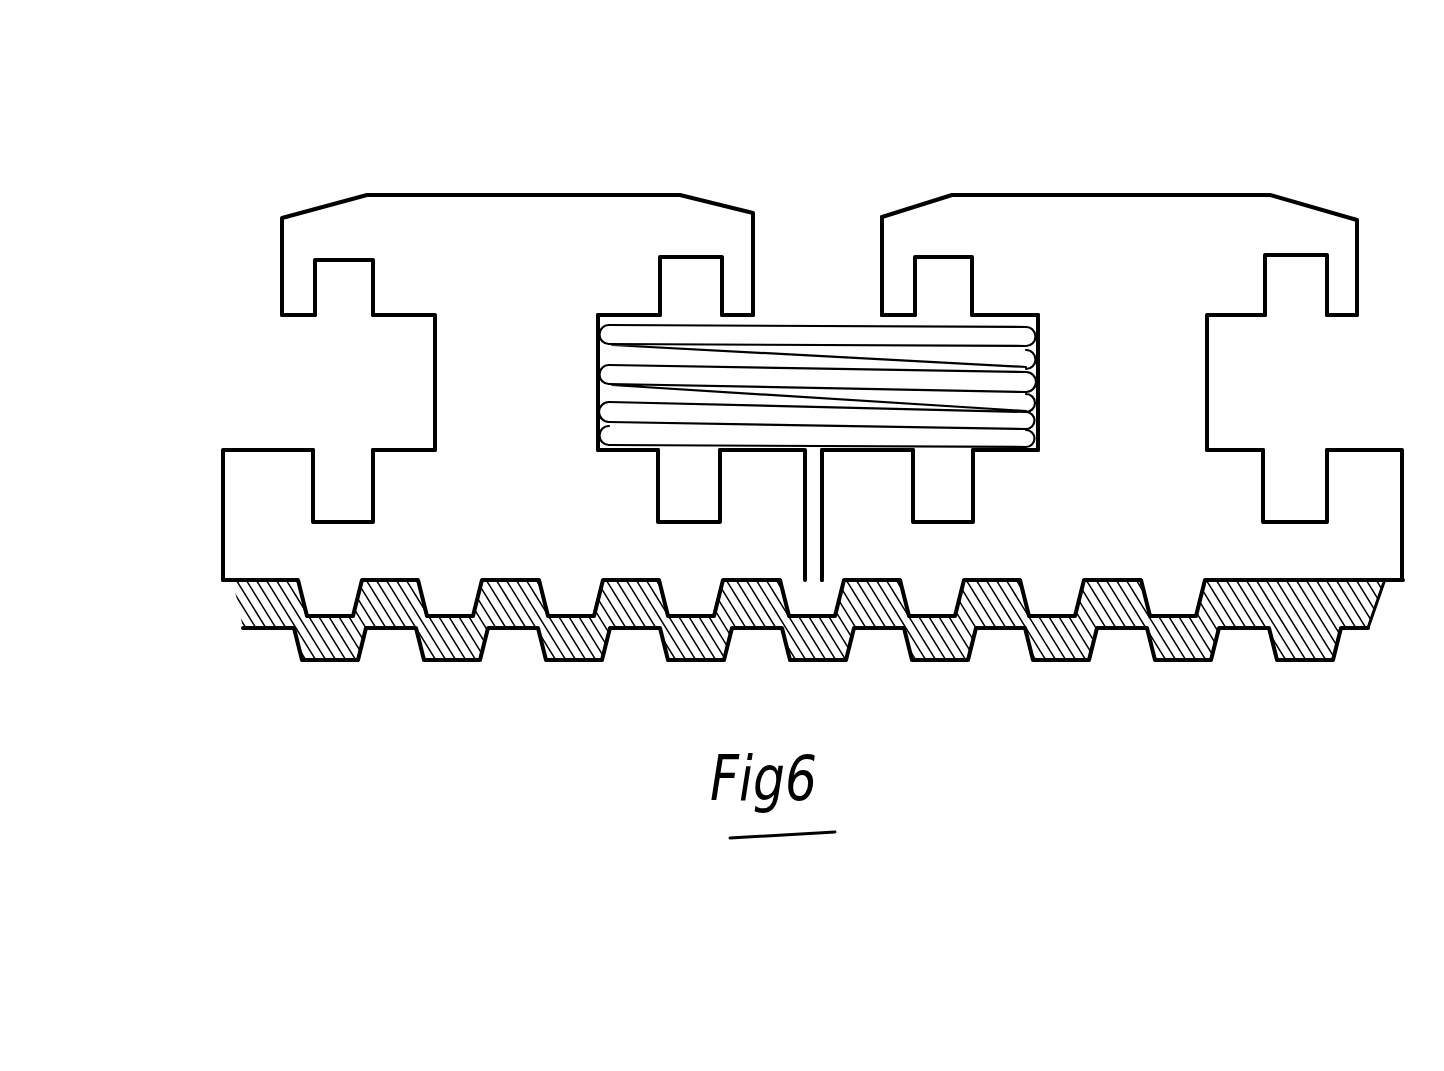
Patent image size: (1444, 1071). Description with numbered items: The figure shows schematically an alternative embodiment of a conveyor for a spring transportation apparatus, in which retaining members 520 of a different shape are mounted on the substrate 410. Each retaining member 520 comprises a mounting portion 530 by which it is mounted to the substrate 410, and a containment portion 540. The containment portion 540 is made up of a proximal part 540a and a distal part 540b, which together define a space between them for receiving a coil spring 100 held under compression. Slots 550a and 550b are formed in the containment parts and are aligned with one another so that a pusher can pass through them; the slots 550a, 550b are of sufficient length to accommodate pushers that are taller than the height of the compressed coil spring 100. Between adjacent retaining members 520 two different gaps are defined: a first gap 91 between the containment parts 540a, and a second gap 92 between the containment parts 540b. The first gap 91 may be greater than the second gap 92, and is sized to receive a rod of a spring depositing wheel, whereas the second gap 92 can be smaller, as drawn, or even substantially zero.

The coil spring 100 is at (648, 374).
The substrate 410 is at (1197, 630).
The retaining member 520 is at (457, 247).
The mounting portion 530 is at (1117, 543).
The containment portion 540 is at (303, 368).
The proximal containment part 540a is at (250, 541).
The distal containment part 540b is at (297, 265).
The slot 550a is at (685, 480).
The slot 550b is at (693, 272).
The first gap 91 is at (807, 254).
The second gap 92 is at (813, 547).